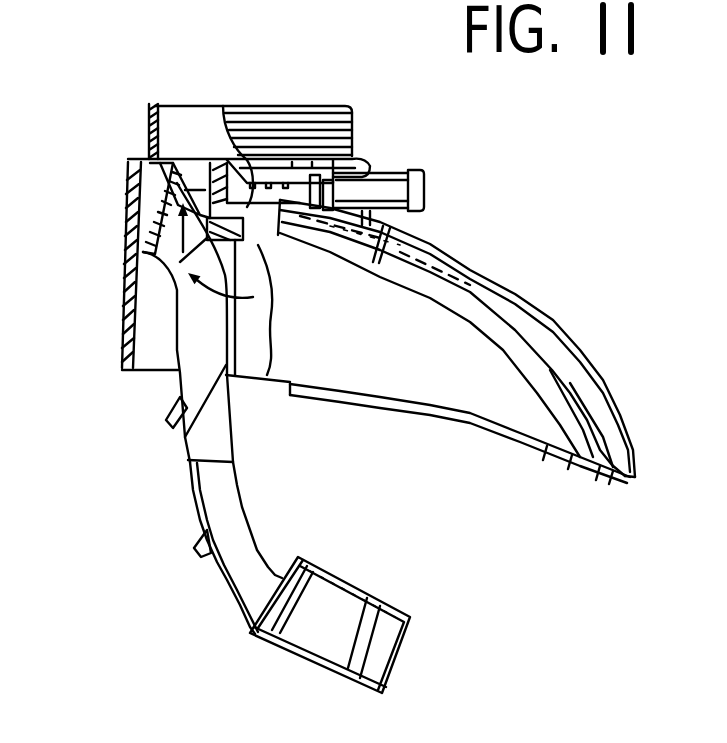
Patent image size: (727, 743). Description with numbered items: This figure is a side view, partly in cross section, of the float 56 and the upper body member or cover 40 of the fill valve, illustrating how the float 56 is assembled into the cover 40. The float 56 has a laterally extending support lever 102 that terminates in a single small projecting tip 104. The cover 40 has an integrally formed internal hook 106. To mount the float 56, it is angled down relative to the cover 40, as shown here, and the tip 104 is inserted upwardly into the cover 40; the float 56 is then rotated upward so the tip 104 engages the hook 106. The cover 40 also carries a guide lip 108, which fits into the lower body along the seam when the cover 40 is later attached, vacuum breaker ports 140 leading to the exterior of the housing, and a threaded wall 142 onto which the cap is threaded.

The upper body member or cover 40 is at (551, 320).
The float 56 is at (408, 633).
The support lever 102 is at (193, 372).
The projecting tip 104 is at (180, 158).
The internal hook 106 is at (153, 188).
The guide lip 108 is at (548, 450).
The vacuum breaker ports 140 is at (252, 188).
The threaded wall 142 is at (353, 132).